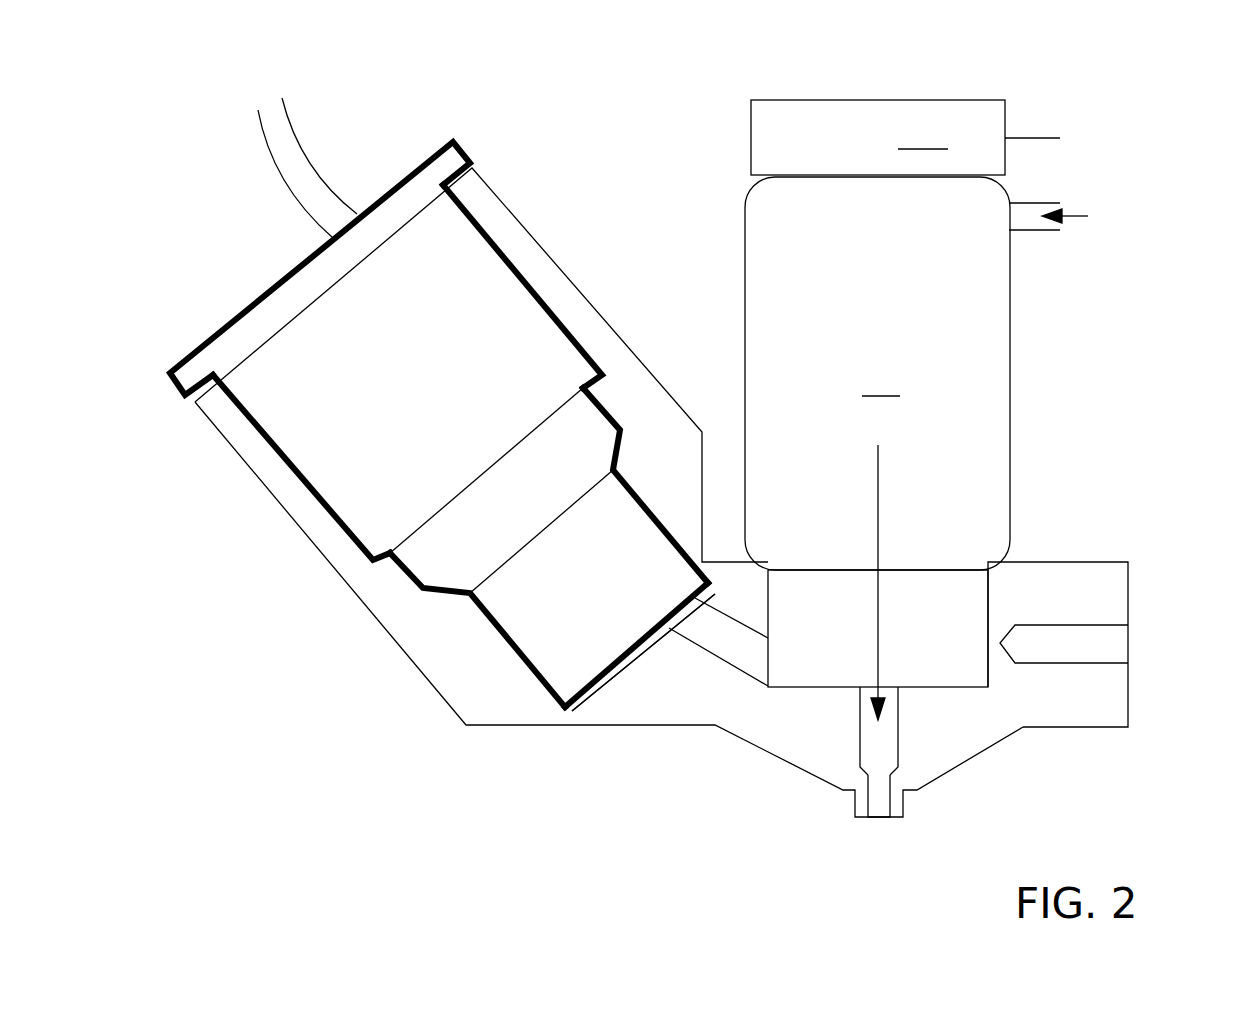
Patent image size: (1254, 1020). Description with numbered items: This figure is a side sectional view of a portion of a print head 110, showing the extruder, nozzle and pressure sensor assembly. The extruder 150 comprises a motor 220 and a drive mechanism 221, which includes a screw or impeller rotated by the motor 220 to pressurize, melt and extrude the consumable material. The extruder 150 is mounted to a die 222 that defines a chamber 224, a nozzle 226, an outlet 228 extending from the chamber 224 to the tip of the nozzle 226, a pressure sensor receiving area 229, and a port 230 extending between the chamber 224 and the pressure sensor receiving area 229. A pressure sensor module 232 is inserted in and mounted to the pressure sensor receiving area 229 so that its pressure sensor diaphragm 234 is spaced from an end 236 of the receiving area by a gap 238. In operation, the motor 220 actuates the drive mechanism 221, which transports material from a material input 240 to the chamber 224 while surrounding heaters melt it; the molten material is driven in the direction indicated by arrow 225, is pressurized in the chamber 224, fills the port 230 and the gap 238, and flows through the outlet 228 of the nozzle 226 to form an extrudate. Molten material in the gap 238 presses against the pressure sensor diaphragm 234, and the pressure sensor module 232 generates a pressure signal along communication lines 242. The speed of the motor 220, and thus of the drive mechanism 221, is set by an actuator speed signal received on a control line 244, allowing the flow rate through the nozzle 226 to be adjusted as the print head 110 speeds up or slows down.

The print head 110 is at (405, 444).
The extruder 150 is at (877, 286).
The motor 220 is at (878, 137).
The drive mechanism 221 is at (877, 373).
The die 222 is at (1113, 572).
The chamber 224 is at (982, 588).
The arrow 225 is at (880, 515).
The nozzle 226 is at (853, 817).
The outlet 228 is at (880, 810).
The pressure sensor receiving area 229 is at (352, 561).
The port 230 is at (737, 657).
The pressure sensor module 232 is at (422, 177).
The pressure sensor diaphragm 234 is at (578, 683).
The end 236 is at (588, 693).
The gap 238 is at (608, 673).
The material input 240 is at (1052, 200).
The communication lines 242 is at (270, 165).
The control line 244 is at (1035, 137).